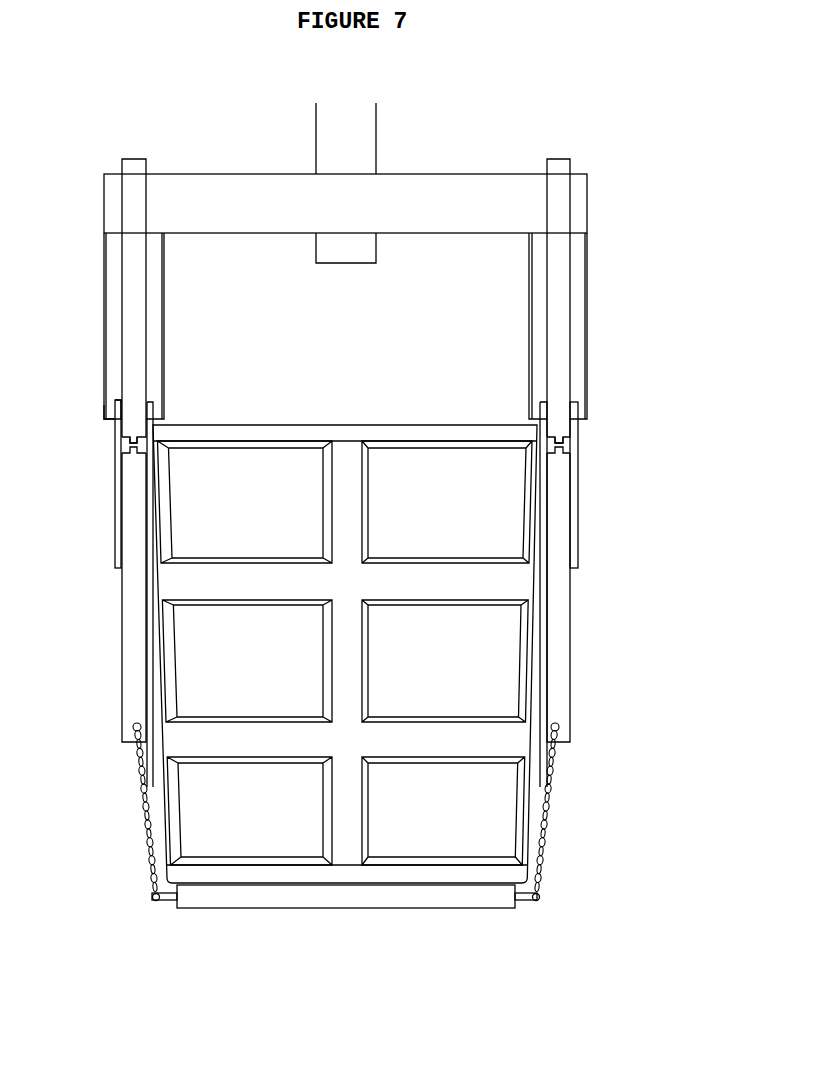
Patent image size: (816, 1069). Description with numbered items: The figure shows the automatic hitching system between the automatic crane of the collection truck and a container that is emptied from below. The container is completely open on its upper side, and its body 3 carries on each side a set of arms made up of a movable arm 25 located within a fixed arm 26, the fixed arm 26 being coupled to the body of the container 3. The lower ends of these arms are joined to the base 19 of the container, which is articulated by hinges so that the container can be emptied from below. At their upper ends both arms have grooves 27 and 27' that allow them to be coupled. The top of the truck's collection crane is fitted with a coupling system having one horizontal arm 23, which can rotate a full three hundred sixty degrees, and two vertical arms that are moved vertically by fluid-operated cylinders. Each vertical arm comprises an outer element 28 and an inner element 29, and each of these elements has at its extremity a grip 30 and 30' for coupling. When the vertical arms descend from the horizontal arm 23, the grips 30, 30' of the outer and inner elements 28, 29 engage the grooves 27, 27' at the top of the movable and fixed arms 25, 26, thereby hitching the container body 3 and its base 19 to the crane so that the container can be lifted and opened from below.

The horizontal arm 23 is at (486, 183).
The outer element 28 is at (588, 263).
The inner element 29 is at (565, 353).
The grip 30 is at (612, 430).
The groove 27 is at (604, 470).
The grip 30' is at (83, 414).
The groove 27' is at (88, 436).
The fixed arm 26 is at (581, 538).
The movable arm 25 is at (569, 715).
The container body 3 is at (513, 795).
The base 19 is at (461, 897).